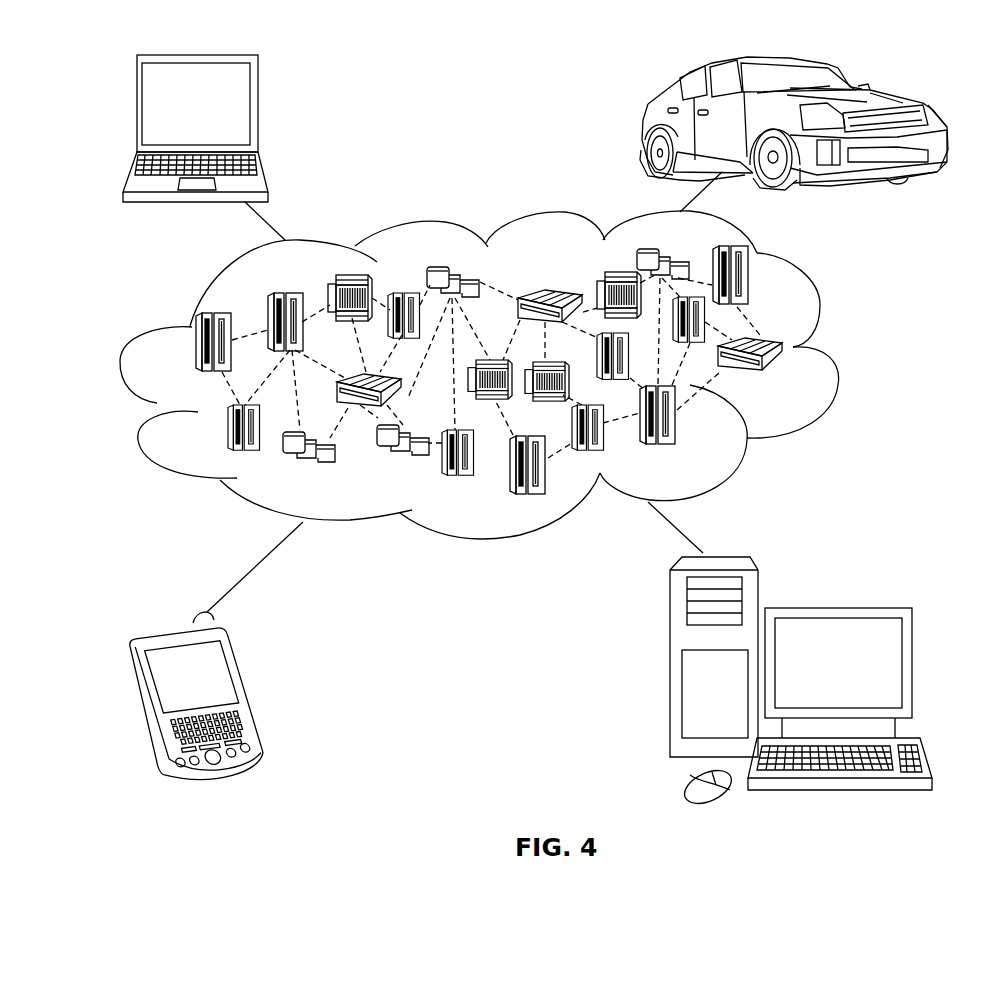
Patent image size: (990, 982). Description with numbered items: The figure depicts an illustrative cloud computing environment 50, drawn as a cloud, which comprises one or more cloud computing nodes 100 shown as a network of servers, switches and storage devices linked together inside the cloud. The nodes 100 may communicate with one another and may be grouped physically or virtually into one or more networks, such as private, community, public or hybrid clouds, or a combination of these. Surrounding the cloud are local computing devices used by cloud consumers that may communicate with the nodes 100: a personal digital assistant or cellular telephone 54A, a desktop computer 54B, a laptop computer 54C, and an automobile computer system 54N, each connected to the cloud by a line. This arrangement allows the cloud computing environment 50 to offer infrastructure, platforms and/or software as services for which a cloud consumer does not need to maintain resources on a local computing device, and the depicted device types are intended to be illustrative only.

The cloud computing environment 50 is at (833, 350).
The cloud computing nodes 100 is at (792, 380).
The personal digital assistant (PDA) or cellular telephone 54A is at (245, 687).
The desktop computer 54B is at (837, 605).
The laptop computer 54C is at (257, 110).
The automobile computer system 54N is at (642, 122).